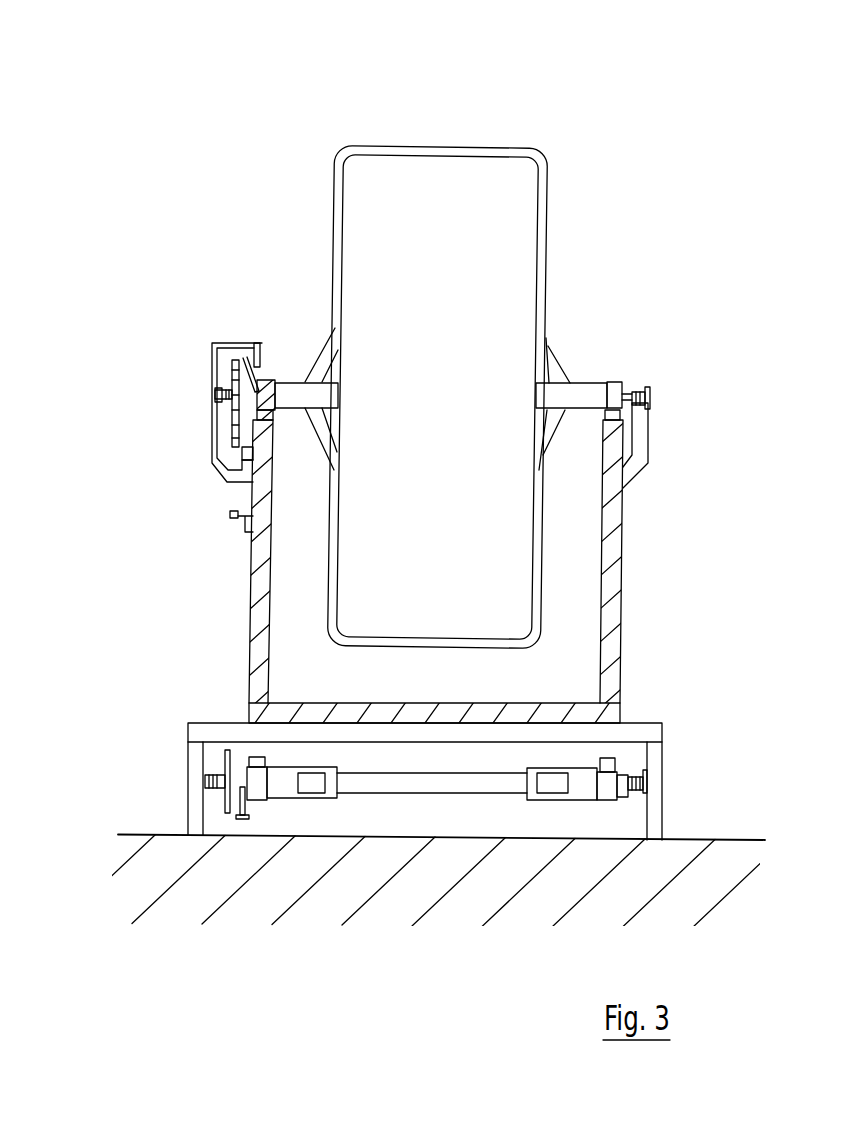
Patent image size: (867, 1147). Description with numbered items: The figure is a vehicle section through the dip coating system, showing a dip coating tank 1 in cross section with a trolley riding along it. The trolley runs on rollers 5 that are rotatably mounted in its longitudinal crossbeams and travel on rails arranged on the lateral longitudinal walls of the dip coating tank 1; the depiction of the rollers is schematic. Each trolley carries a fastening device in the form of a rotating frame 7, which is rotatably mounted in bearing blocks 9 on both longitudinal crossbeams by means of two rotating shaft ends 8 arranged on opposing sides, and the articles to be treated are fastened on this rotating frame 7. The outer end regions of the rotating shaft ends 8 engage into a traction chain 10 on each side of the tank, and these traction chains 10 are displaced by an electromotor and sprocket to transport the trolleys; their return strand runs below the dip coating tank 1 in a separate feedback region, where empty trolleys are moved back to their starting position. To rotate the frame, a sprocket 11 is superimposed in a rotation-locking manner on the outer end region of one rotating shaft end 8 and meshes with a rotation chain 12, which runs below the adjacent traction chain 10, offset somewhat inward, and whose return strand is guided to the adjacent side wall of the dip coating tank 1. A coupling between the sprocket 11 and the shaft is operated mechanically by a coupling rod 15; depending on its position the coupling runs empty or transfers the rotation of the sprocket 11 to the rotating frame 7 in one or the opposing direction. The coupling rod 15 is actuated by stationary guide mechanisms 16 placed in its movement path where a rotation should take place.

The dip coating tank 1 is at (251, 642).
The rollers 5 is at (252, 436).
The rotating frame 7 is at (441, 150).
The rotating shaft ends 8 is at (297, 378).
The bearing blocks 9 is at (266, 378).
The traction chain 10 is at (217, 390).
The sprocket 11 is at (233, 414).
The rotation chain 12 is at (233, 436).
The coupling rod 15 is at (220, 368).
The guide mechanisms 16 is at (262, 348).